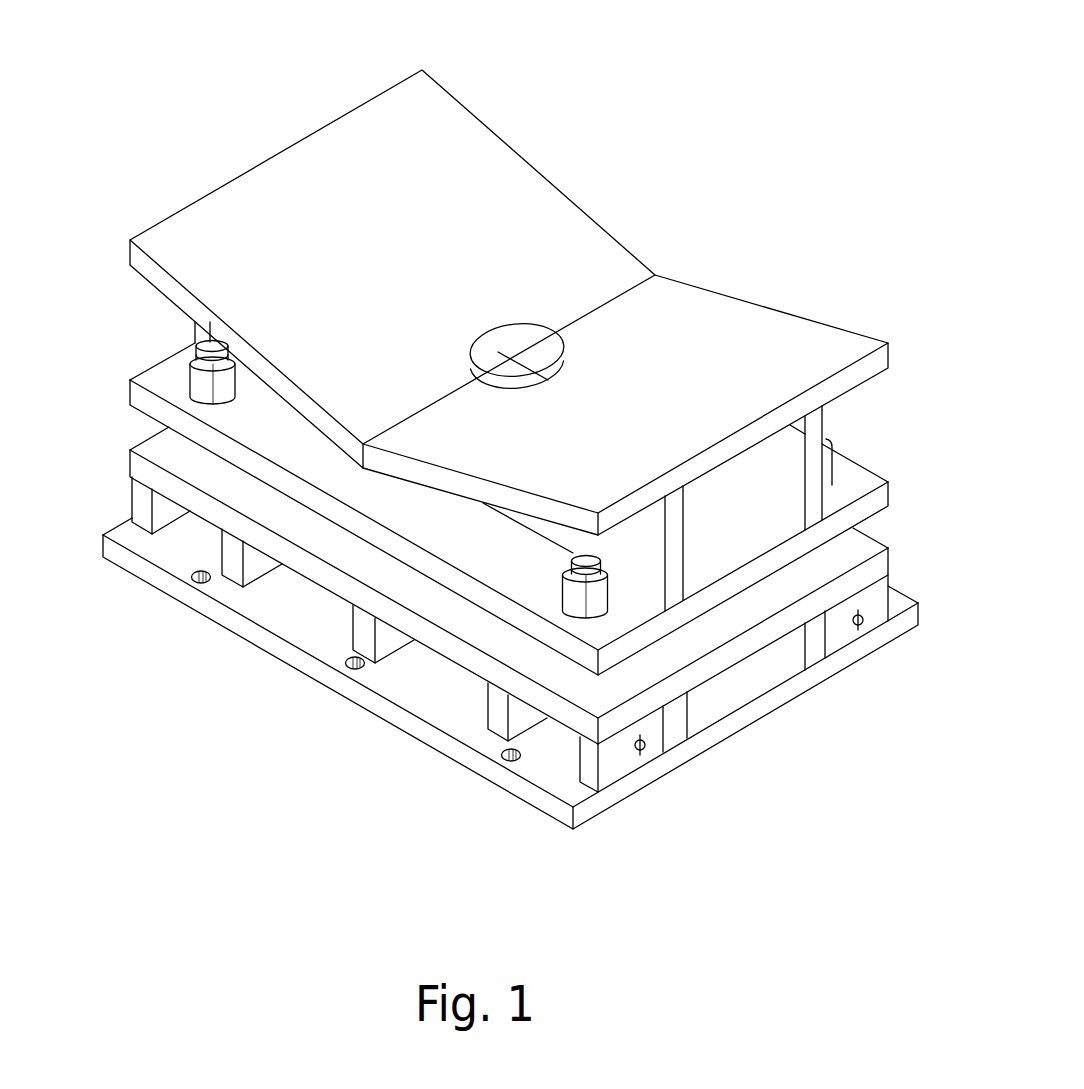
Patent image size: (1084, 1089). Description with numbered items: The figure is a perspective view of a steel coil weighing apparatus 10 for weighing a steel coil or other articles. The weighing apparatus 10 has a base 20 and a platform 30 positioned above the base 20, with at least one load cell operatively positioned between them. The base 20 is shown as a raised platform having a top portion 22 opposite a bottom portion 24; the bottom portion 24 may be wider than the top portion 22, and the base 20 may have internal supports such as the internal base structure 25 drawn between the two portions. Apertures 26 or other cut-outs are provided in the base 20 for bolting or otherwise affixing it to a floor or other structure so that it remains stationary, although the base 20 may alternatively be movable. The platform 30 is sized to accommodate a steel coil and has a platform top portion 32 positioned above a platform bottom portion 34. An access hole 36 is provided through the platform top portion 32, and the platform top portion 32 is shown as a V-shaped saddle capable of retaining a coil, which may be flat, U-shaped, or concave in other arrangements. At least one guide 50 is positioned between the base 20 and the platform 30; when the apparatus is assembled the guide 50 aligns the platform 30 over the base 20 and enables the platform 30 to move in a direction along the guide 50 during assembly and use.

The weighing apparatus 10 is at (747, 76).
The base 20 is at (124, 513).
The top portion 22 is at (860, 547).
The bottom portion 24 is at (440, 722).
The internal base structure 25 is at (255, 567).
The apertures 26 is at (195, 578).
The platform 30 is at (474, 106).
The platform top portion 32 is at (808, 338).
The platform bottom portion 34 is at (857, 478).
The access hole 36 is at (481, 341).
The guide 50 is at (607, 582).